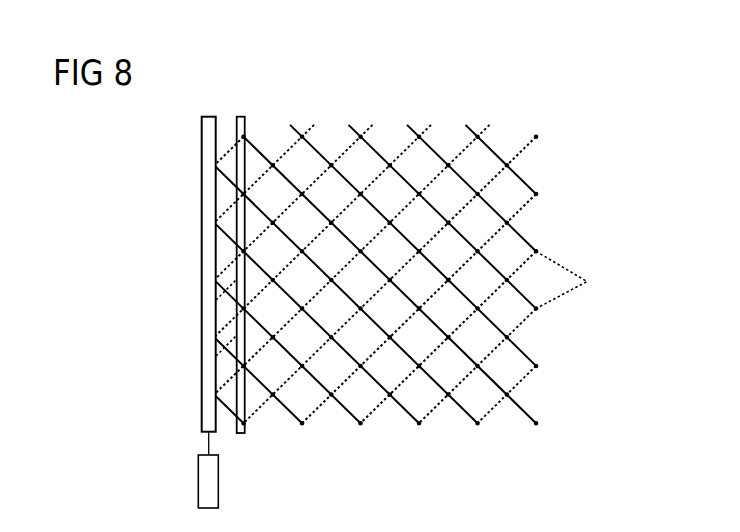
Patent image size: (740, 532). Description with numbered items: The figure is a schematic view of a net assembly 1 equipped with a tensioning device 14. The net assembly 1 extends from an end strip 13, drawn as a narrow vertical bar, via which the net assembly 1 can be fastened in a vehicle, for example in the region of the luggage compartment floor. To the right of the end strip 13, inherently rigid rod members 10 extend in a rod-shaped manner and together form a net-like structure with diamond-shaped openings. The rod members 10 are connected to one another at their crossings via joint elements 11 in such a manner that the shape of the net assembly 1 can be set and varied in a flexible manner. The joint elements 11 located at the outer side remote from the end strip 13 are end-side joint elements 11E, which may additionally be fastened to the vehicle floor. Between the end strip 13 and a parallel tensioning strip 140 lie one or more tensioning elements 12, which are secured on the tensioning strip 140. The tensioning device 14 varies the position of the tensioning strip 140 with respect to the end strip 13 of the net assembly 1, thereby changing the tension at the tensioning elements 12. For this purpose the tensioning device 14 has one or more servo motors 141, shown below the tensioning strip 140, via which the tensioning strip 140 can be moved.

The net assembly 1 is at (421, 238).
The rod members 10 is at (526, 176).
The joint elements 11 is at (360, 137).
The end-side joint elements 11E is at (587, 282).
The tensioning elements 12 is at (230, 147).
The end strip 13 is at (245, 117).
The tensioning device 14 is at (209, 295).
The tensioning strip 140 is at (200, 307).
The servo motors 141 is at (207, 477).